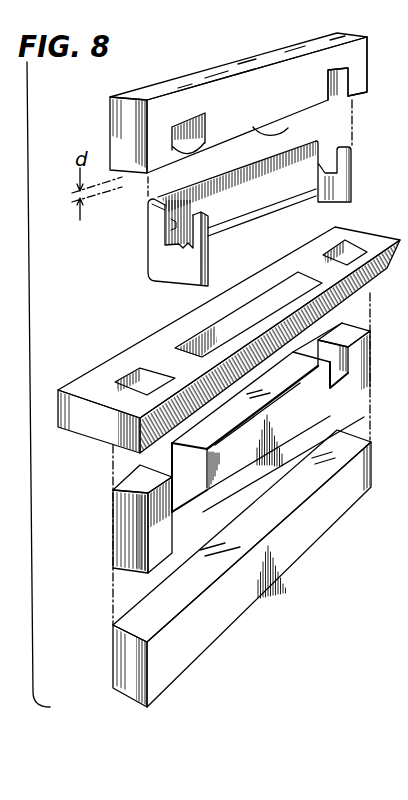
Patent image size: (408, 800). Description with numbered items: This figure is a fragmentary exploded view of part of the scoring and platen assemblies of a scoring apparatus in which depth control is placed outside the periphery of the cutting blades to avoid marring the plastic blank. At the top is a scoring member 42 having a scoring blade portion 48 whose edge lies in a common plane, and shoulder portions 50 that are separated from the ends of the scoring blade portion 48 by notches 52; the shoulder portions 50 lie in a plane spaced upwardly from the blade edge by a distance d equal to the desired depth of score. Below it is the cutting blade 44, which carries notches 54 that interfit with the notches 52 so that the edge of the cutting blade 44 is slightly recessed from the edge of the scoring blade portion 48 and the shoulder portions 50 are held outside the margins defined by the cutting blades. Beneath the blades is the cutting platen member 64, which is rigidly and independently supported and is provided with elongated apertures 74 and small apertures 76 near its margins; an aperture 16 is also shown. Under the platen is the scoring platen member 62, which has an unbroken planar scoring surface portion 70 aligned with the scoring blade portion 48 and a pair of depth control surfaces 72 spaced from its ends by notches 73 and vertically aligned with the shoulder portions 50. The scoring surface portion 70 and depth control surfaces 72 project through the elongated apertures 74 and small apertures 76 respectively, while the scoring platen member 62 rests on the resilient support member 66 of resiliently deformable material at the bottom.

The scoring member 42 is at (257, 77).
The scoring blade portion 48 is at (288, 128).
The shoulder portion 50 is at (350, 99).
The notch 52 is at (352, 83).
The cutting blade 44 is at (153, 277).
The notch 54 is at (166, 230).
The cutting platen member 64 is at (80, 377).
The aperture 16 is at (141, 367).
The small aperture 76 is at (343, 246).
The elongated aperture 74 is at (247, 308).
The scoring platen member 62 is at (113, 534).
The scoring surface portion 70 is at (281, 388).
The depth control surface 72 is at (133, 479).
The notch 73 is at (351, 360).
The resilient support member 66 is at (113, 666).